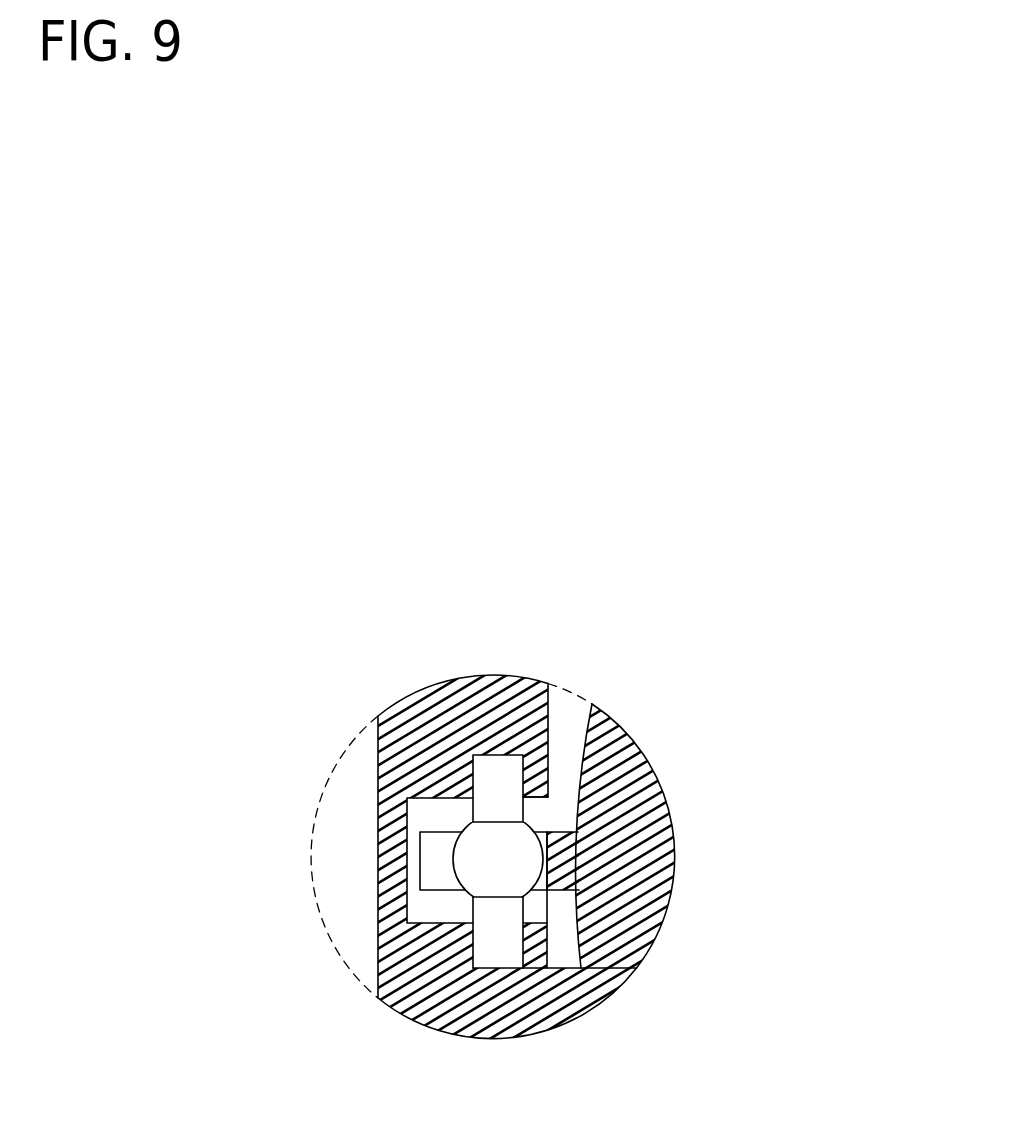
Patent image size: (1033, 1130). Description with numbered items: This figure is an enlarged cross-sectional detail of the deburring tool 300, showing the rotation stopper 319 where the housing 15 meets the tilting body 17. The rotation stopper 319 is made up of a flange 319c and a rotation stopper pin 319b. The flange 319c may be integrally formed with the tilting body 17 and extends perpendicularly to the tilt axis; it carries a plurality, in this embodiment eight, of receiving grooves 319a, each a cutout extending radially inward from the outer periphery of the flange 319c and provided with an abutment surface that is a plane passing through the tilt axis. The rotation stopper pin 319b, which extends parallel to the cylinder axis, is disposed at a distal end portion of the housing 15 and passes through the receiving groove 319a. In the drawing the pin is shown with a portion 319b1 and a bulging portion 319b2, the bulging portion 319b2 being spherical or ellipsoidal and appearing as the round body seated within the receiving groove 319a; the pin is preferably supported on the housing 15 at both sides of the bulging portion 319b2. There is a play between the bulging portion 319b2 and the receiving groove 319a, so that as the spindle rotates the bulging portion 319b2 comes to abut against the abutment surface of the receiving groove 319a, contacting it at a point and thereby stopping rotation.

The deburring tool 300 is at (780, 474).
The rotation stopper 319 is at (623, 678).
The tilting body 17 is at (630, 735).
The housing 15 is at (378, 747).
The receiving groove 319a is at (540, 893).
The rotation stopper pin 319b is at (848, 753).
The first gap portion 319b1 is at (523, 806).
The bulging portion 319b2 is at (580, 832).
The flange 319c is at (420, 868).